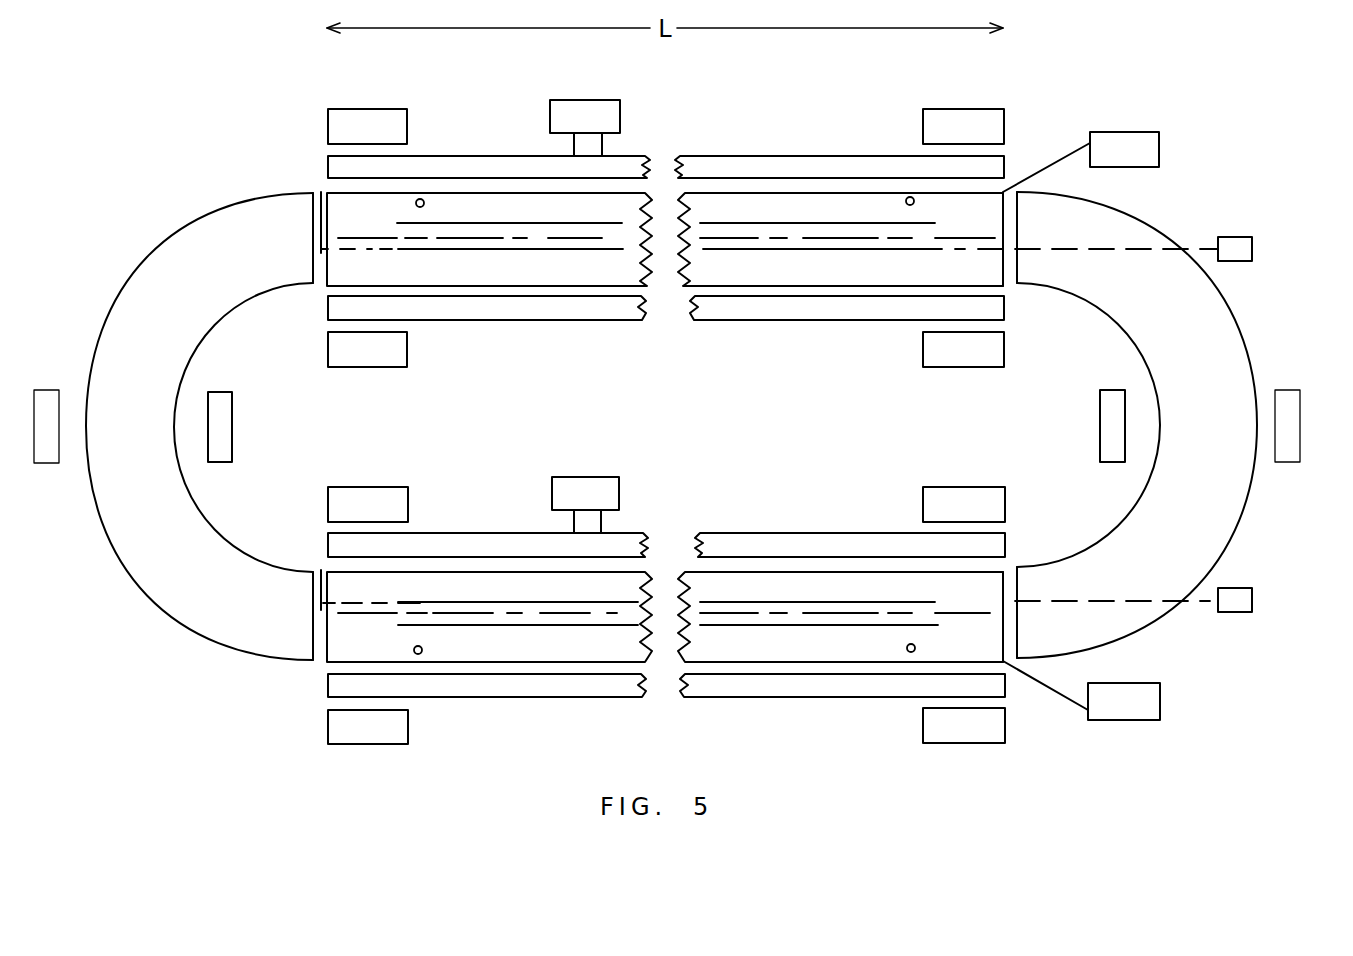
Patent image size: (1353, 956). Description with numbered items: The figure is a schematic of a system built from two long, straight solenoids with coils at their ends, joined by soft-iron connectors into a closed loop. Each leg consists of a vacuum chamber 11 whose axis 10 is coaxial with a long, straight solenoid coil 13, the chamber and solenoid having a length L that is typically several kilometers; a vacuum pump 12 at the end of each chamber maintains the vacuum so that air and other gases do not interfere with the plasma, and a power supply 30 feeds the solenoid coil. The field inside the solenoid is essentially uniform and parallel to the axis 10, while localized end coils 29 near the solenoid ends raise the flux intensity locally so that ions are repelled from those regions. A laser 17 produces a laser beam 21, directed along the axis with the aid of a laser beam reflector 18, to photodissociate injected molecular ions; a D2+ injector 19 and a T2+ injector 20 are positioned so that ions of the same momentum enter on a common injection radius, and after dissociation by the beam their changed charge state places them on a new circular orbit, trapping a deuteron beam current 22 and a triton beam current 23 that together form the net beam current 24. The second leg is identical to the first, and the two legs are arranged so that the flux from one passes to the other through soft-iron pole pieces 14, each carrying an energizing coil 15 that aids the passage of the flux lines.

The axis of machine 10 is at (812, 238).
The vacuum chamber 11 is at (1003, 283).
The vacuum pump 12 is at (1127, 132).
The solenoid coil 13 is at (482, 156).
The soft-iron pole piece 14 is at (163, 250).
The energizing coil for pole piece 15 is at (222, 392).
The laser 17 is at (1231, 237).
The laser beam reflector 18 is at (321, 192).
The D2+ injector 19 is at (424, 205).
The T2+ injector 20 is at (905, 203).
The laser beam 21 is at (1192, 249).
The deuteron beam current 22 is at (499, 213).
The triton beam current 23 is at (557, 213).
The net beam current 24 is at (731, 223).
The localized end coil 29 is at (375, 109).
The power supply for solenoid 30 is at (585, 100).